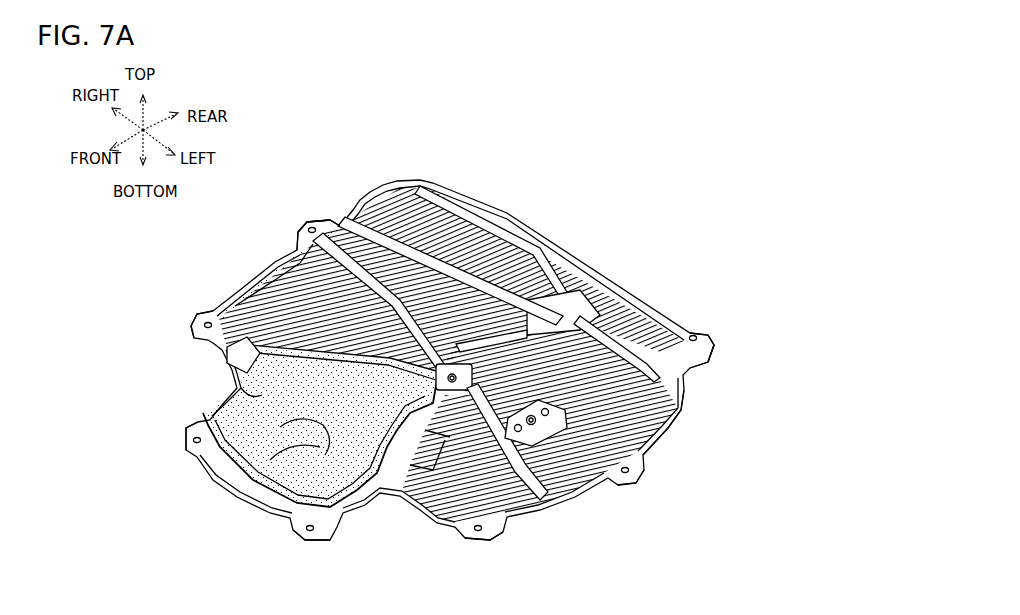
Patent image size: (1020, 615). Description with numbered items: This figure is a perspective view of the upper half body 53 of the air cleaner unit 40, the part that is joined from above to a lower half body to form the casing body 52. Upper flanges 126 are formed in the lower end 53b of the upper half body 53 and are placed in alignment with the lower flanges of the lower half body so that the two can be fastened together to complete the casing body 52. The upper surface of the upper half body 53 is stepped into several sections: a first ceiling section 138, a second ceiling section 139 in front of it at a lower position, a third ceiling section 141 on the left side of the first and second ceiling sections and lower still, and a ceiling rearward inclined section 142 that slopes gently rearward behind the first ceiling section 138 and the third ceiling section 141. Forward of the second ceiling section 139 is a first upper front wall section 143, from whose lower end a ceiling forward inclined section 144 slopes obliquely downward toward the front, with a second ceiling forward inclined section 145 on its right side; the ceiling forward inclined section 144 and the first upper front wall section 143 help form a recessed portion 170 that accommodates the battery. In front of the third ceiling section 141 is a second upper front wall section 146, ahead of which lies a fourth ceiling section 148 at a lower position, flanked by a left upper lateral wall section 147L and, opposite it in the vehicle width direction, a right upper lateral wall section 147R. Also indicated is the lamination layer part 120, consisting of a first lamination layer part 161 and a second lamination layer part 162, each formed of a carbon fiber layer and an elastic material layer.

The air cleaner unit 40 is at (725, 178).
The casing body 52 is at (714, 242).
The upper half body 53 is at (649, 270).
The lower end 53b is at (712, 337).
The lamination layer part 120 is at (128, 337).
The upper flanges 126 is at (308, 228).
The first ceiling section 138 is at (403, 210).
The second ceiling section 139 is at (338, 222).
The third ceiling section 141 is at (633, 307).
The ceiling rearward inclined section 142 is at (527, 219).
The first upper front wall section 143 is at (290, 293).
The ceiling forward inclined section 144 is at (256, 392).
The second ceiling forward inclined section 145 is at (230, 304).
The second upper front wall section 146 is at (548, 492).
The right upper lateral wall section 147R is at (296, 266).
The left upper lateral wall section 147L is at (663, 430).
The fourth ceiling section 148 is at (437, 473).
The first lamination layer part 161 is at (263, 423).
The second lamination layer part 162 is at (210, 357).
The recessed portion 170 is at (282, 427).